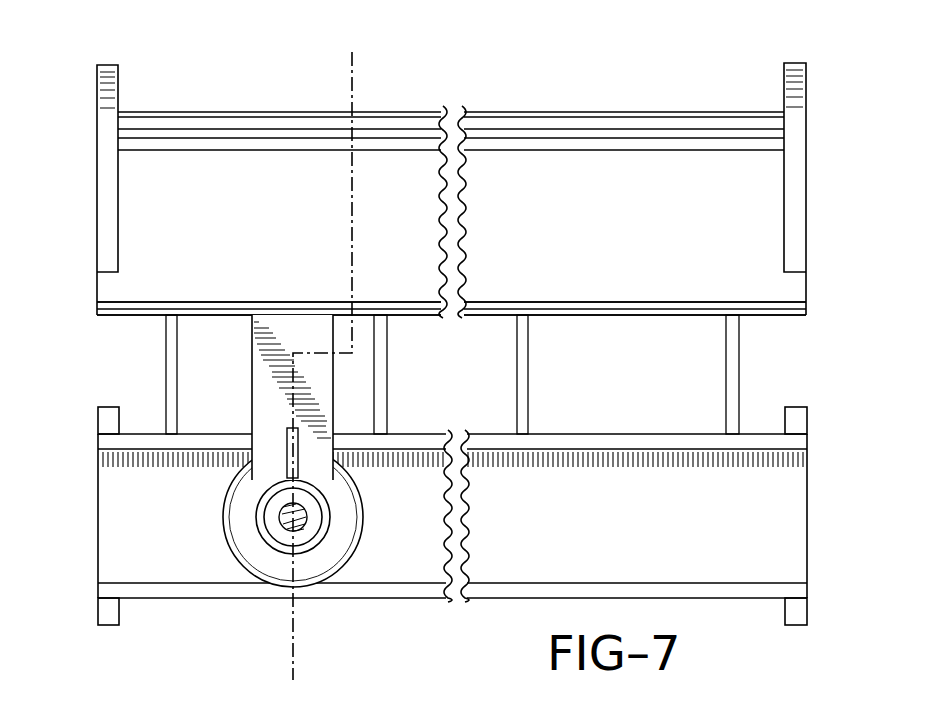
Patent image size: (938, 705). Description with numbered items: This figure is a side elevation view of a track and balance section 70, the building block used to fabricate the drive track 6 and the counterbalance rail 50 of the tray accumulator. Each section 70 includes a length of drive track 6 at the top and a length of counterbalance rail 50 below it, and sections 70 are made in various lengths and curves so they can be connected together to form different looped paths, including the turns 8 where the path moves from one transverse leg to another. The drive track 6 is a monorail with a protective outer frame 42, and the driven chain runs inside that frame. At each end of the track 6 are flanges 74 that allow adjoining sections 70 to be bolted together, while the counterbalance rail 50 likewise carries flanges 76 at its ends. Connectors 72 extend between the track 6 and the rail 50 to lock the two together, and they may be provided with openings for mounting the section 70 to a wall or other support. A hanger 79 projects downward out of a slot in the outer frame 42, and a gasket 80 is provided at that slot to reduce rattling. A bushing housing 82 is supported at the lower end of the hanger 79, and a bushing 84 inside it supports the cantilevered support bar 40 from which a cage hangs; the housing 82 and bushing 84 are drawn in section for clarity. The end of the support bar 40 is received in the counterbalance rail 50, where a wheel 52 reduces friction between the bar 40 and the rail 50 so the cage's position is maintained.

The drive track 6 is at (596, 98).
The track and balance section 70 is at (452, 192).
The flanges 74 is at (102, 127).
The protective outer frame 42 is at (160, 216).
The gasket 80 is at (607, 305).
The connectors 72 is at (170, 353).
The hanger 79 is at (270, 405).
The counterbalance rail 50 is at (452, 538).
The flanges 76 is at (102, 420).
The wheel 52 is at (317, 550).
The bushing housing 82 is at (322, 538).
The bushing 84 is at (268, 525).
The support bar 40 is at (283, 510).
The 180 degree turns 8 is at (352, 52).